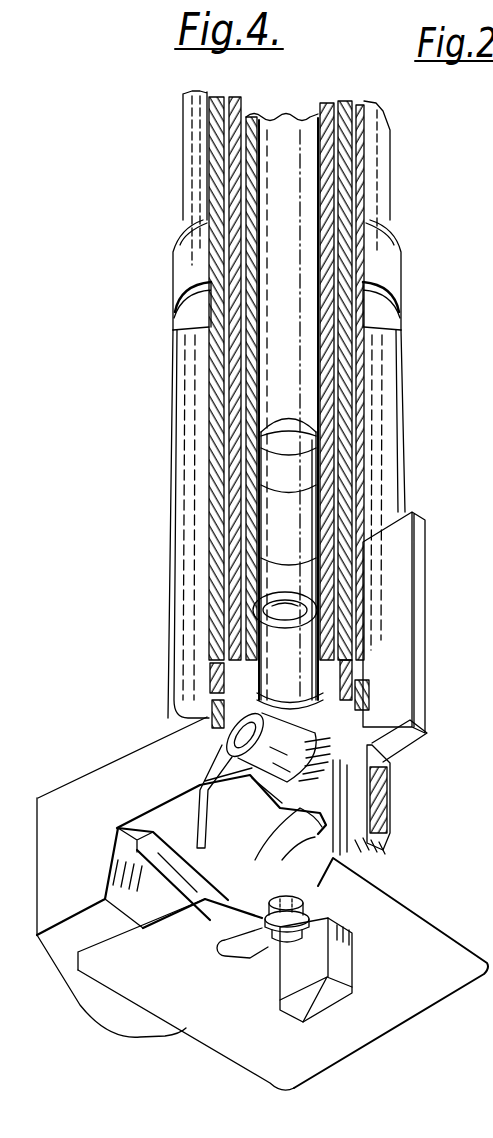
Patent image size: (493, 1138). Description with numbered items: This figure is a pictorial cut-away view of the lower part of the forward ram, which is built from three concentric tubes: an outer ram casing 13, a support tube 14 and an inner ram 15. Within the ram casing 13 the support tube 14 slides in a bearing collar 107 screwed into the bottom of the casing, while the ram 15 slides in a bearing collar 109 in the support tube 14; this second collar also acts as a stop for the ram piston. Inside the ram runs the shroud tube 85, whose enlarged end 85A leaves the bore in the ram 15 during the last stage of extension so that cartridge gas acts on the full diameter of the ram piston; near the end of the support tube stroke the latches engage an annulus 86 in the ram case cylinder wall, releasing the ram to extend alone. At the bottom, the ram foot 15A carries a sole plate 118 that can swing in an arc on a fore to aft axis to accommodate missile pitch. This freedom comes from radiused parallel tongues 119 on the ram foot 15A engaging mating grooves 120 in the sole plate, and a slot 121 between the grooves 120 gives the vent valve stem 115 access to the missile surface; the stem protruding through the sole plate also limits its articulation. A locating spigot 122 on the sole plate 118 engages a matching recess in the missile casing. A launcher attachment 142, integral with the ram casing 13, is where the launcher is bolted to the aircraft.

The ram casing 13 is at (387, 363).
The support tube 14 is at (345, 383).
The ram 15 is at (328, 422).
The ram foot 15A is at (232, 817).
The shroud tube 85 is at (303, 187).
The enlarged end of shroud tube 85A is at (267, 527).
The annulus 86 is at (217, 563).
The bearing collar 107 is at (380, 750).
The bearing collar 109 is at (343, 773).
The vent valve stem 115 is at (283, 940).
The sole plate 118 is at (427, 927).
The radiused parallel tongues 119 is at (362, 872).
The grooves 120 is at (230, 907).
The slot 121 is at (250, 915).
The locating spigot 122 is at (303, 1008).
The launcher attachment 142 is at (57, 833).